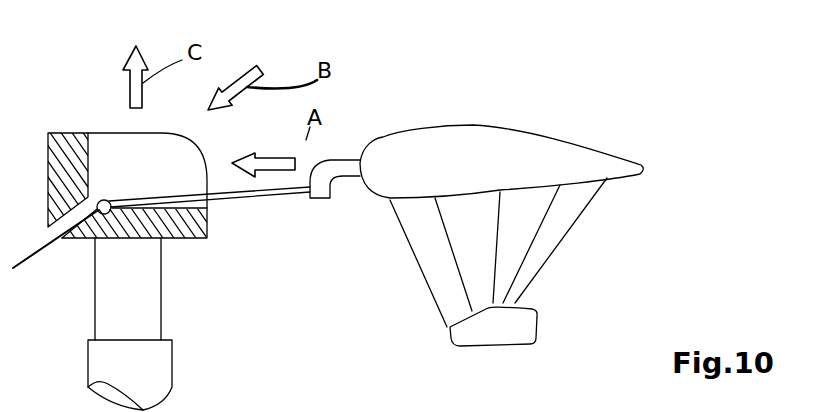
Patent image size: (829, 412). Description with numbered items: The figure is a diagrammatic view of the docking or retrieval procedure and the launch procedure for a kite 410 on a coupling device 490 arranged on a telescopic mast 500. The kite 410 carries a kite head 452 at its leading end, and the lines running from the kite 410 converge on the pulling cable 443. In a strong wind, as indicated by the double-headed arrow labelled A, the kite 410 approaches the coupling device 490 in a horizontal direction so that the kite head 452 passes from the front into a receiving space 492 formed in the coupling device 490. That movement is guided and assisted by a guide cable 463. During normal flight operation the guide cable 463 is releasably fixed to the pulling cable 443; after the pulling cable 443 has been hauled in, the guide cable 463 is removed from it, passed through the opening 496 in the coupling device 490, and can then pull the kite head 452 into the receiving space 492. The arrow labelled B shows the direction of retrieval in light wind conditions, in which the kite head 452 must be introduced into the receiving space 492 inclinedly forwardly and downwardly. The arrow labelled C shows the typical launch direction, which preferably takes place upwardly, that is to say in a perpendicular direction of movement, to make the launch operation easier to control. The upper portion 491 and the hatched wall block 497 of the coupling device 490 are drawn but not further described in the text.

The coupling device 490 is at (222, 60).
The housing upper portion 491 is at (140, 150).
The receiving space 492 is at (171, 161).
The housing wall block 497 is at (107, 153).
The opening 496 is at (61, 237).
The telescopic mast 500 is at (122, 305).
The guide cable 463 is at (240, 197).
The kite head 452 is at (336, 158).
The kite 410 is at (493, 153).
The pulling cable 443 is at (413, 393).